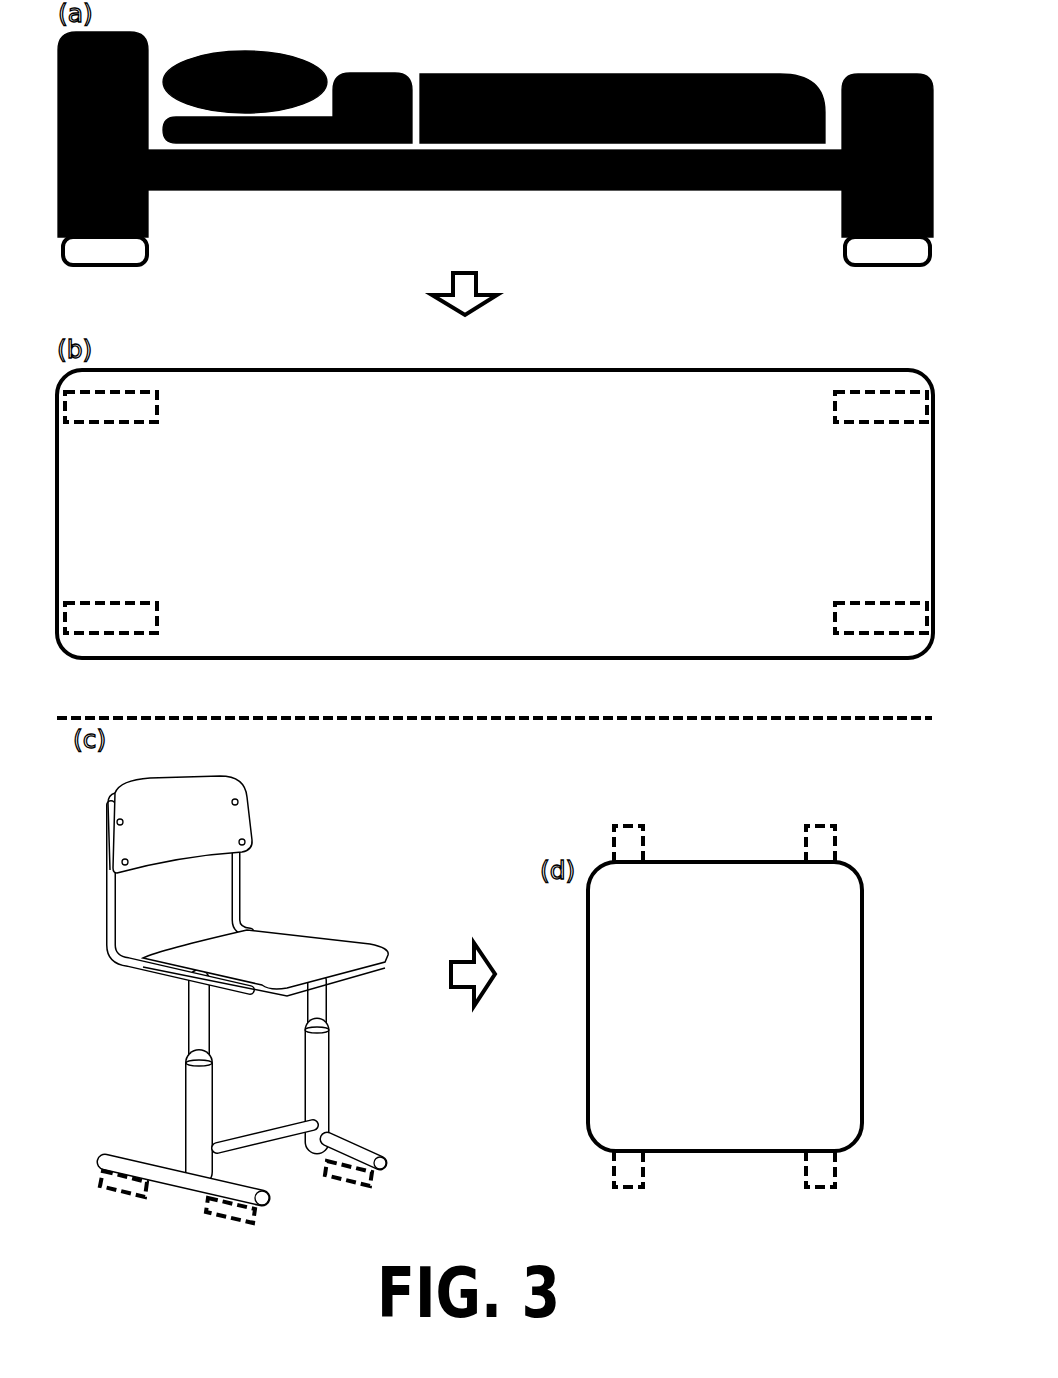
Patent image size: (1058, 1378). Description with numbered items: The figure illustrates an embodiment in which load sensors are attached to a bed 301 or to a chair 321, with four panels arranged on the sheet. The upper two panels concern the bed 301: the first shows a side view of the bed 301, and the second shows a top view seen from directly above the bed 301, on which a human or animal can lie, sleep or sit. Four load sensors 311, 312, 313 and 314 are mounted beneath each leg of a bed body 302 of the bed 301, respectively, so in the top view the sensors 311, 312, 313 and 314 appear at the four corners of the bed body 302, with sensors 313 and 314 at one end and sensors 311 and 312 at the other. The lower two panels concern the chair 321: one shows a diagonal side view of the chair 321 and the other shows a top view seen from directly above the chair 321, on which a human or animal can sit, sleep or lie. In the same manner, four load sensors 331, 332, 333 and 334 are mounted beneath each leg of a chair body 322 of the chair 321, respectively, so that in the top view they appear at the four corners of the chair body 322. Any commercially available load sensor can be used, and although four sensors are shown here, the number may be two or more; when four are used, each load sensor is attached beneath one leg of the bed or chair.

The bed 301 is at (497, 345).
The bed body 302 is at (407, 200).
The load sensor 311 is at (156, 236).
The load sensor 312 is at (833, 237).
The load sensor 313 is at (115, 388).
The load sensor 314 is at (880, 388).
The chair 321 is at (520, 975).
The chair body 322 is at (300, 925).
The load sensor 331 is at (241, 1214).
The load sensor 332 is at (364, 1181).
The load sensor 333 is at (121, 1202).
The load sensor 334 is at (223, 1128).